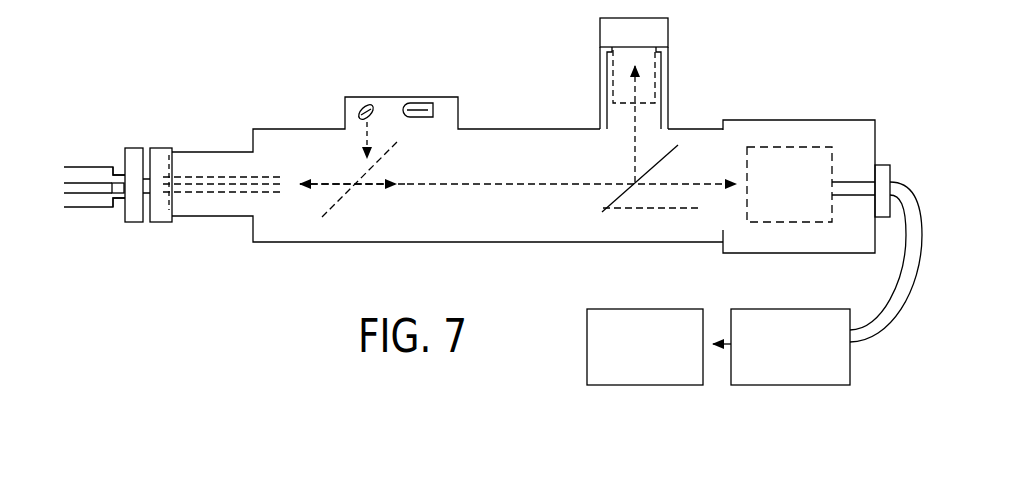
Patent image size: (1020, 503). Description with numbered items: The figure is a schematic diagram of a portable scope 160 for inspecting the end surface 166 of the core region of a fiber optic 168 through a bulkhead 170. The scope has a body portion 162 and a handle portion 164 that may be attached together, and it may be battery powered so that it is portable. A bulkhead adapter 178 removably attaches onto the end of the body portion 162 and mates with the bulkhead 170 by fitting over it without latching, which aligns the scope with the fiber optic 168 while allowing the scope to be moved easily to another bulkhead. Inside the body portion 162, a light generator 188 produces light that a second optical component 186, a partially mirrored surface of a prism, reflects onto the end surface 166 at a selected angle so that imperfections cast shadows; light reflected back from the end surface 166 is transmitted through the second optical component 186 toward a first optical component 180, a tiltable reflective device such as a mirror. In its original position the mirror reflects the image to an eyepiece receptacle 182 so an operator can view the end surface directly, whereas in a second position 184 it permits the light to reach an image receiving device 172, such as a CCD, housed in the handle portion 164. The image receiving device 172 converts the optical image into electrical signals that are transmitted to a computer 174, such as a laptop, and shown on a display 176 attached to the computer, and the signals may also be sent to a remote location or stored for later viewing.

The portable scope 160 is at (306, 74).
The body portion 162 is at (511, 246).
The handle portion 164 is at (791, 110).
The end surface 166 is at (120, 205).
The fiber optic 168 is at (75, 155).
The bulkhead 170 is at (134, 144).
The image receiving device 172 is at (812, 233).
The computer 174 is at (793, 396).
The display 176 is at (630, 396).
The bulkhead adapter 178 is at (162, 142).
The first optical component 180 is at (705, 160).
The eyepiece receptacle 182 is at (670, 30).
The second position 184 is at (667, 217).
The second optical component 186 is at (408, 152).
The light generator 188 is at (415, 96).